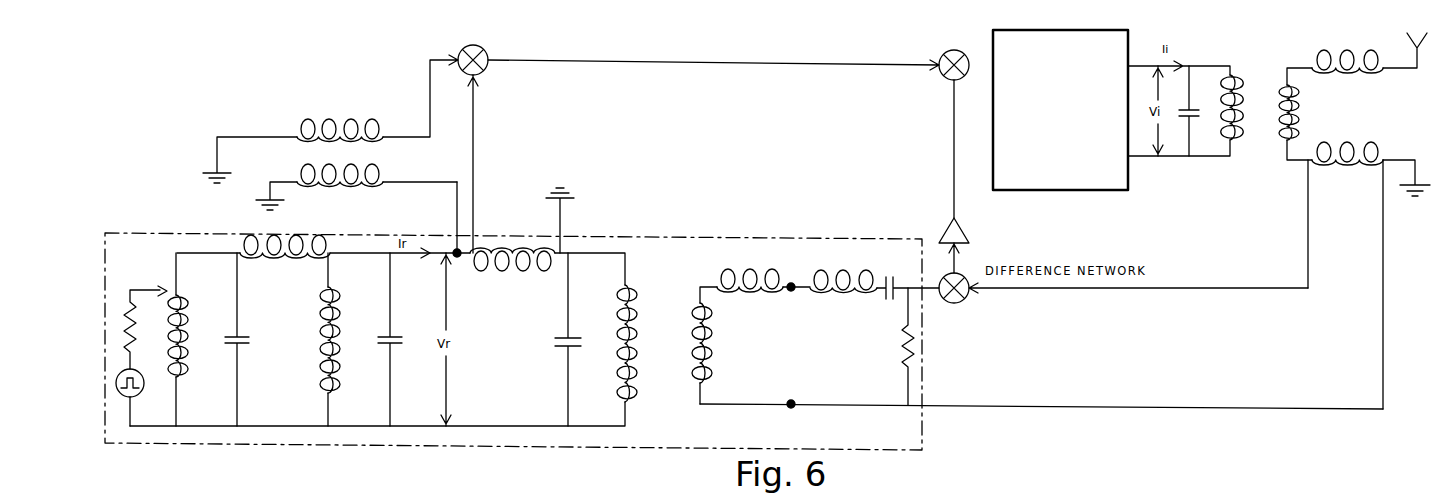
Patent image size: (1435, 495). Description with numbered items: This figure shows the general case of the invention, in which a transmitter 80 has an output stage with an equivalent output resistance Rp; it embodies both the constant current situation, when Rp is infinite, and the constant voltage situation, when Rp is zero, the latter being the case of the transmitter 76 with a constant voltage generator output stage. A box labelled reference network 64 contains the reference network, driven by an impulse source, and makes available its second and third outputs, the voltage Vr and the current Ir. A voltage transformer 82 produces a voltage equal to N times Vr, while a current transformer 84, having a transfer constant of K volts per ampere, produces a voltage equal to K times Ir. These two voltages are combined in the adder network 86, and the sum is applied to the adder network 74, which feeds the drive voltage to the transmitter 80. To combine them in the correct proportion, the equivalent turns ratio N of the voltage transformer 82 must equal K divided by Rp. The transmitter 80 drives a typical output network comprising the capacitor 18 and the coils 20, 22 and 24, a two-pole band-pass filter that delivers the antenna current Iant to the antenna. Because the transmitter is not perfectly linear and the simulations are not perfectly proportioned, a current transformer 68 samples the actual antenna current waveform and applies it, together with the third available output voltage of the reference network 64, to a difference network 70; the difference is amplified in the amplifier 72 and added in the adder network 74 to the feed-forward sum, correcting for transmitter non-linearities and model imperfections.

The capacitor 18 is at (1190, 108).
The coil 20 is at (1236, 103).
The coil 22 is at (1296, 104).
The coil 24 is at (1356, 57).
The reference network 64 is at (138, 232).
The current transformer 68 is at (1334, 163).
The difference network 70 is at (963, 302).
The amplifier 72 is at (960, 236).
The adder network 74 is at (935, 56).
The transmitter 76 is at (1087, 494).
The transmitter 80 is at (1105, 30).
The voltage transformer 82 is at (358, 158).
The current transformer 84 is at (497, 250).
The adder network 86 is at (486, 54).